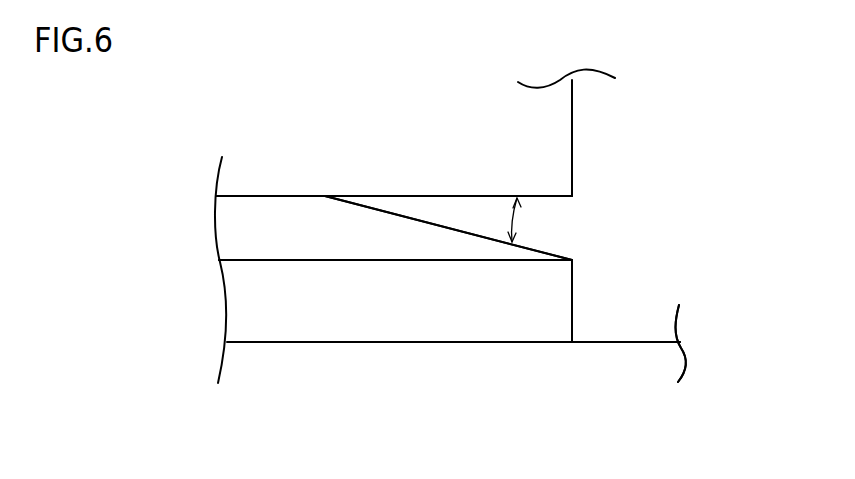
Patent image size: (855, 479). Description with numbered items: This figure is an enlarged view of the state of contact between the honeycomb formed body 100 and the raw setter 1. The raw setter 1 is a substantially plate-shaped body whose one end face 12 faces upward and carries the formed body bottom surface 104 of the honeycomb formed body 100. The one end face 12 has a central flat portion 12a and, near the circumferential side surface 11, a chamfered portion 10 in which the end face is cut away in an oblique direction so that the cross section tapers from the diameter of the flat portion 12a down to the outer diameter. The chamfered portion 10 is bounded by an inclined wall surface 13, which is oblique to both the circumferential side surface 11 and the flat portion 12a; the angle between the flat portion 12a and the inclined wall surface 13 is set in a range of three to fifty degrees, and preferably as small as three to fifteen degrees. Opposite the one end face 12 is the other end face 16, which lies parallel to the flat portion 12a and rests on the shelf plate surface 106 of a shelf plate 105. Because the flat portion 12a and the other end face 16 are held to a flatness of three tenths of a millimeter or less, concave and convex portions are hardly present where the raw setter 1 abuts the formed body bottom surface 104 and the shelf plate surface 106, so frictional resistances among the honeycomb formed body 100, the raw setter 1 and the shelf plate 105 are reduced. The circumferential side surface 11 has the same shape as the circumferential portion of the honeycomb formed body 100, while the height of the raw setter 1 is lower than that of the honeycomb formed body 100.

The honeycomb formed body 100 is at (599, 122).
The raw setter 1 is at (678, 205).
The flat portion 12a is at (307, 196).
The one end face 12 is at (394, 228).
The formed body bottom surface 104 is at (280, 196).
The circumferential side surface 11 is at (360, 313).
The chamfered portion 10 is at (412, 247).
The inclined wall surface 13 is at (395, 228).
The other end face 16 is at (535, 342).
The shelf plate 105 is at (647, 340).
The shelf plate surface 106 is at (681, 343).